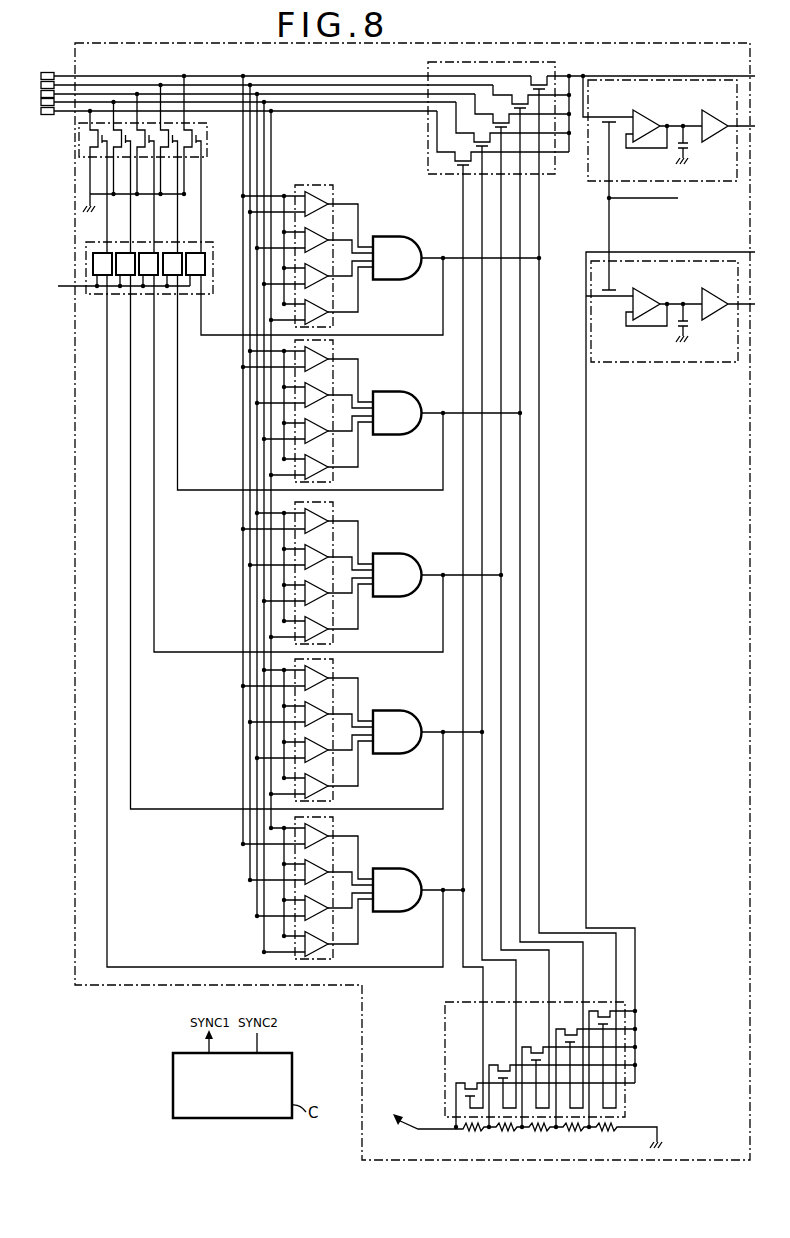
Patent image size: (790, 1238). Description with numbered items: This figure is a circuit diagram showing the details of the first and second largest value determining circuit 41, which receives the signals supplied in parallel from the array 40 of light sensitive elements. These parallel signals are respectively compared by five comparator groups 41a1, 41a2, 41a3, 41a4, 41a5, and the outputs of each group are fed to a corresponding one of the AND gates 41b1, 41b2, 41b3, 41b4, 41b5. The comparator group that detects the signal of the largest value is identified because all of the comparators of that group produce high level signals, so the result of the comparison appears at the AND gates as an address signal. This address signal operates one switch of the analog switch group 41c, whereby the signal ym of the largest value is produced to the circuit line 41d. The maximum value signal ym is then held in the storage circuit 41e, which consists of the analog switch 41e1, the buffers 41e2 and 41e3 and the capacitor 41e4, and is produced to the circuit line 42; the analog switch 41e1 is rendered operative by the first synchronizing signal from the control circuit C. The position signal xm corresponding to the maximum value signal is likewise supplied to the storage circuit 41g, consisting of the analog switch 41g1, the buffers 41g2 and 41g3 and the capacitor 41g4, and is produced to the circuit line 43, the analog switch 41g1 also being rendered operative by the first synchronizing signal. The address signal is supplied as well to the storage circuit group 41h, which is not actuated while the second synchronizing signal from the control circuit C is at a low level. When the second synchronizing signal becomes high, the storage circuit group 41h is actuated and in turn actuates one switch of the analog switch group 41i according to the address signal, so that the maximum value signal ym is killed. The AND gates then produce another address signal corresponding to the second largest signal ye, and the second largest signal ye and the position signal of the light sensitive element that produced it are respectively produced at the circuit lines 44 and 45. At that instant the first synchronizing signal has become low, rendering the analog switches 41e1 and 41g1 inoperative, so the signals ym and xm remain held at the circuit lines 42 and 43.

The array of light sensitive elements 40 is at (45, 72).
The first and second largest value determining circuit 41 is at (745, 43).
The comparator group 41a1 is at (333, 195).
The comparator group 41a2 is at (333, 350).
The comparator group 41a3 is at (333, 512).
The comparator group 41a4 is at (333, 669).
The comparator group 41a5 is at (333, 827).
The AND gate 41b1 is at (408, 237).
The AND gate 41b2 is at (408, 392).
The AND gate 41b3 is at (408, 554).
The AND gate 41b4 is at (408, 711).
The AND gate 41b5 is at (408, 869).
The analog switch group 41c is at (542, 62).
The circuit line 41d is at (445, 1012).
The storage circuit 41e is at (667, 182).
The analog switch 41e1 is at (609, 116).
The buffer 41e2 is at (650, 104).
The buffer 41e3 is at (719, 104).
The capacitor 41e4 is at (688, 160).
The storage circuit 41g is at (670, 327).
The analog switch 41g1 is at (609, 302).
The buffer 41g2 is at (645, 288).
The buffer 41g3 is at (719, 282).
The capacitor 41g4 is at (688, 338).
The storage circuit group 41h is at (213, 270).
The analog switch group 41i is at (207, 140).
The circuit line 42 is at (752, 126).
The circuit line 43 is at (752, 304).
The circuit line 44 is at (752, 76).
The circuit line 45 is at (758, 244).